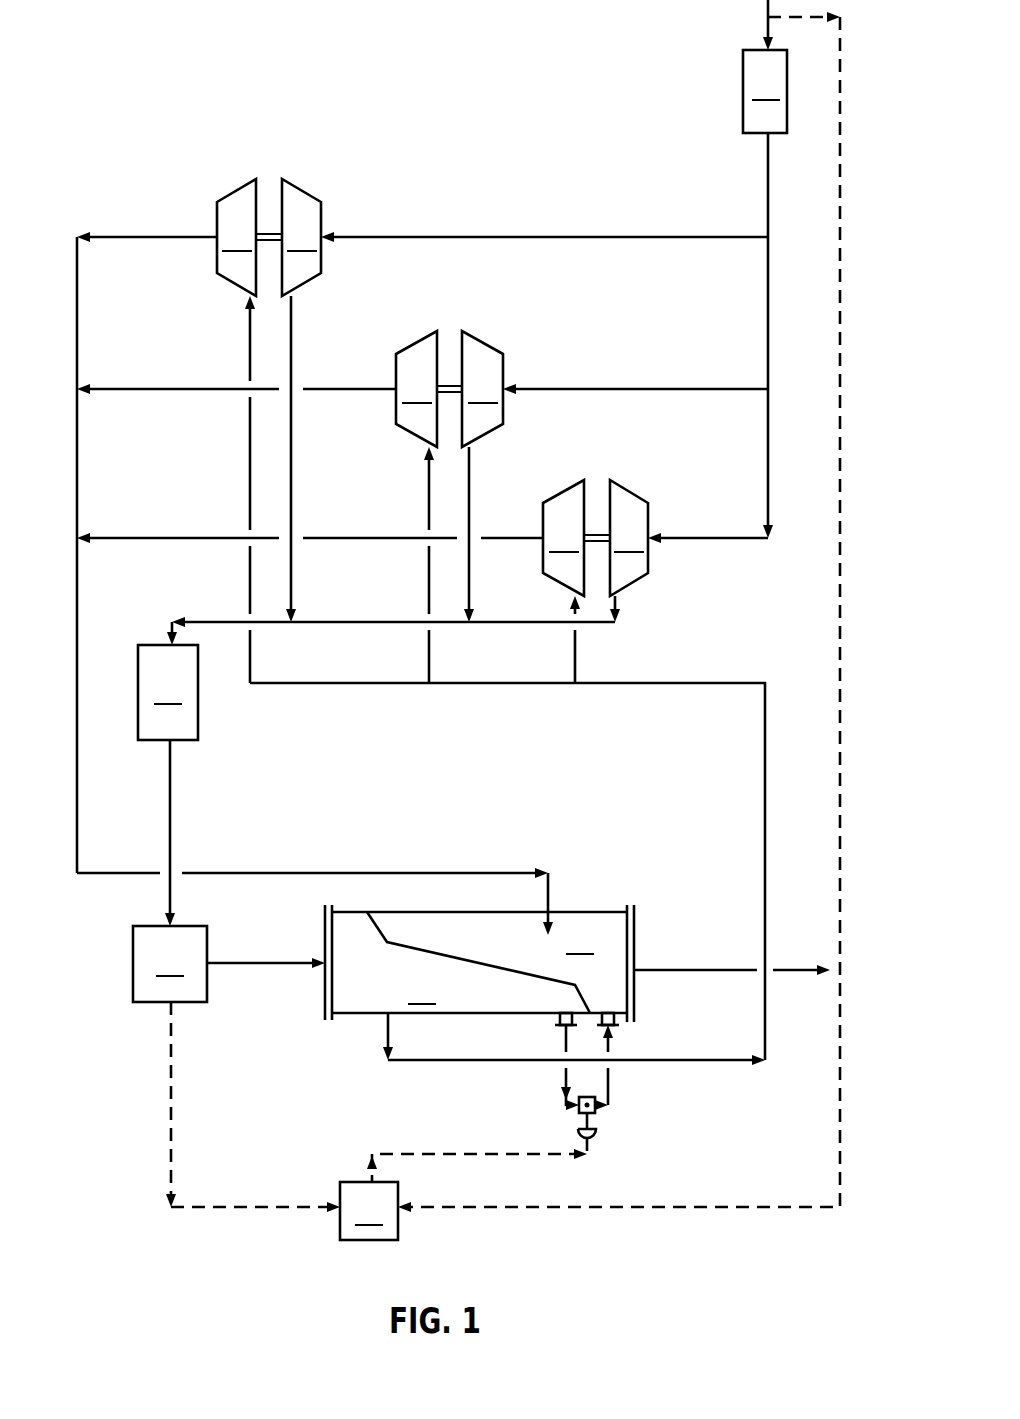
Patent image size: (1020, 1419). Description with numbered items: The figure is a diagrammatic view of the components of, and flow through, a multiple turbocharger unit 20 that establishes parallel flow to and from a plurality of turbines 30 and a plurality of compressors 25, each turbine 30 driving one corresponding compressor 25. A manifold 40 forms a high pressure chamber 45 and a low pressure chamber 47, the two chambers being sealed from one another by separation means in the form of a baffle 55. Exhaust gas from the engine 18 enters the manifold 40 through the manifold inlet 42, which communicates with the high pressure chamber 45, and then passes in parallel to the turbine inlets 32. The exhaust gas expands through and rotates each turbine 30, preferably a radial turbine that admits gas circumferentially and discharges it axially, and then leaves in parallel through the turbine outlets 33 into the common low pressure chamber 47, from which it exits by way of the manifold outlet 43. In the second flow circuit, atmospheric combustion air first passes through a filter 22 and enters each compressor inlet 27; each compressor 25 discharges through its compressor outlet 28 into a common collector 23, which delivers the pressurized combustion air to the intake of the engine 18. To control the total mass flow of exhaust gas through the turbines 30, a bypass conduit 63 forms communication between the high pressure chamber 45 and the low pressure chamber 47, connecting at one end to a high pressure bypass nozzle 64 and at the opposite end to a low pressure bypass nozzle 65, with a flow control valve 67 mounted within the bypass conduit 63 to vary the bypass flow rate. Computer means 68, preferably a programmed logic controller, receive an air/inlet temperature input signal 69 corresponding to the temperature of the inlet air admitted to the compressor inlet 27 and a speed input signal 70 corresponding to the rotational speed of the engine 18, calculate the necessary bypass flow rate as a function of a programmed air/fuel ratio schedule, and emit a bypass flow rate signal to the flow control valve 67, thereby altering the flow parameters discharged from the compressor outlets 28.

The engine 18 is at (229, 964).
The turbine generator unit 20 is at (432, 346).
The filter 22 is at (765, 269).
The collector 23 is at (168, 785).
The compressor 25 is at (597, 468).
The compressor inlet 27 is at (369, 236).
The compressor outlet 28 is at (292, 316).
The turbine 30 is at (400, 387).
The turbine inlet 32 is at (249, 332).
The turbine outlet 33 is at (158, 236).
The manifold 40 is at (535, 948).
The manifold inlet 42 is at (325, 915).
The manifold outlet 43 is at (636, 925).
The high pressure chamber 45 is at (422, 990).
The low pressure chamber 47 is at (580, 940).
The baffle 55 is at (458, 962).
The bypass conduit 63 is at (566, 1086).
The high pressure bypass nozzle 64 is at (558, 1023).
The low pressure bypass nozzle 65 is at (618, 1027).
The flow control valve 67 is at (596, 1114).
The computer means 68 is at (463, 1189).
The air/inlet temperature input signal 69 is at (840, 160).
The speed input signal 70 is at (174, 1078).